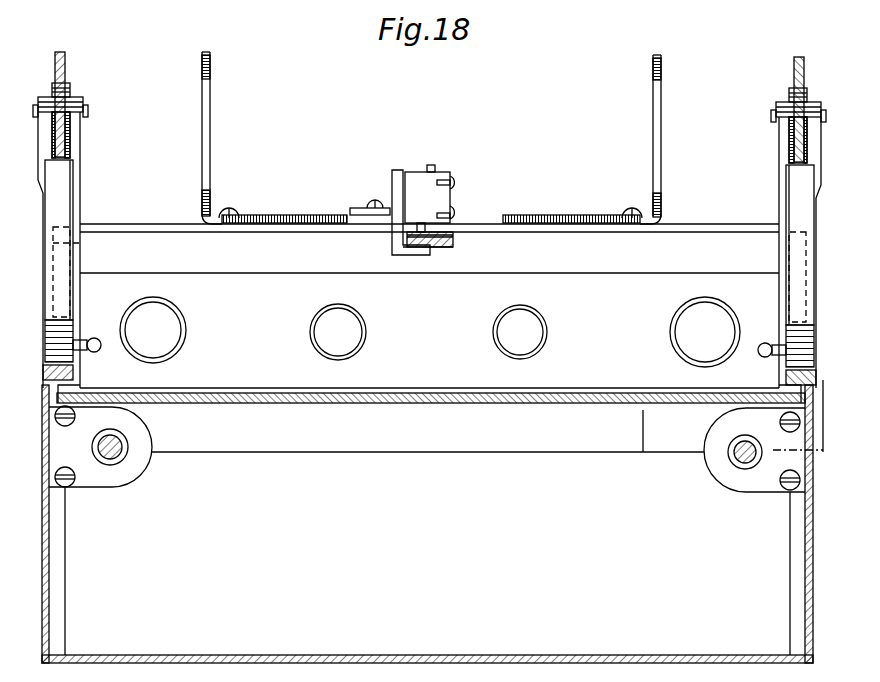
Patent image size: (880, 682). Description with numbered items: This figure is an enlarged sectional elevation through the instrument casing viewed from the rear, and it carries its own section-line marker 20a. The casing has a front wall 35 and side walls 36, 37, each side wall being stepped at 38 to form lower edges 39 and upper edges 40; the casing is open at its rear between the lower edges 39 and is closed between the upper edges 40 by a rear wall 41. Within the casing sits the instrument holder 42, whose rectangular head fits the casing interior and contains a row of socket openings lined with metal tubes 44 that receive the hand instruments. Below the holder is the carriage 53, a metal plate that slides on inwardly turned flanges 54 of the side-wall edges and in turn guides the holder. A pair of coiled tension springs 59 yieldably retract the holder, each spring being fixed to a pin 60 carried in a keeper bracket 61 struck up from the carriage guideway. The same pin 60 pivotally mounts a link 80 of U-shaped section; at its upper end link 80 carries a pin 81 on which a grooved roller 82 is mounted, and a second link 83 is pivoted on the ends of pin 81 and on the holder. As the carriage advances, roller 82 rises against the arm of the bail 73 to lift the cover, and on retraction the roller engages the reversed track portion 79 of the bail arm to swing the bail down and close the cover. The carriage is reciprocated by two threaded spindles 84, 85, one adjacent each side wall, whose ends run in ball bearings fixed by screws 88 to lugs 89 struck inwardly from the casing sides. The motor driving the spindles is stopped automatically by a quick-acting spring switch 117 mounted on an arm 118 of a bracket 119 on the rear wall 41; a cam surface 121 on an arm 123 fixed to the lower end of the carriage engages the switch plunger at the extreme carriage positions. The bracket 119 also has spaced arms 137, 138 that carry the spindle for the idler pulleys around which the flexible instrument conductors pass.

The bail 73 is at (65, 65).
The grooved roller 82 is at (70, 92).
The pin 81 is at (83, 106).
The opposed track portion 79 is at (65, 145).
The link 83 is at (80, 148).
The upper edges 40 is at (53, 212).
The rear wall 41 is at (148, 224).
The step 38 is at (53, 262).
The link 80 is at (66, 300).
The keeper bracket 61 is at (80, 330).
The coiled tension springs 59 is at (100, 338).
The pin 60 is at (90, 352).
The lower edges 39 is at (60, 385).
The metal tubes 44 is at (182, 318).
The instrument holder 42 is at (429, 430).
The carriage 53 is at (283, 398).
The threaded spindle 85 is at (116, 459).
The threaded spindle 84 is at (738, 462).
The lugs 89 is at (112, 488).
The side wall 37 is at (50, 550).
The side wall 36 is at (805, 582).
The front wall 35 is at (548, 660).
The flanges 54 is at (781, 400).
The screws 88 is at (788, 490).
The section line 20a is at (487, 425).
The arm 138 is at (212, 62).
The arm 137 is at (663, 68).
The switch 117 is at (440, 172).
The arm 118 is at (357, 208).
The bracket 119 is at (293, 212).
The cam surface 121 is at (455, 236).
The arm 123 is at (452, 248).